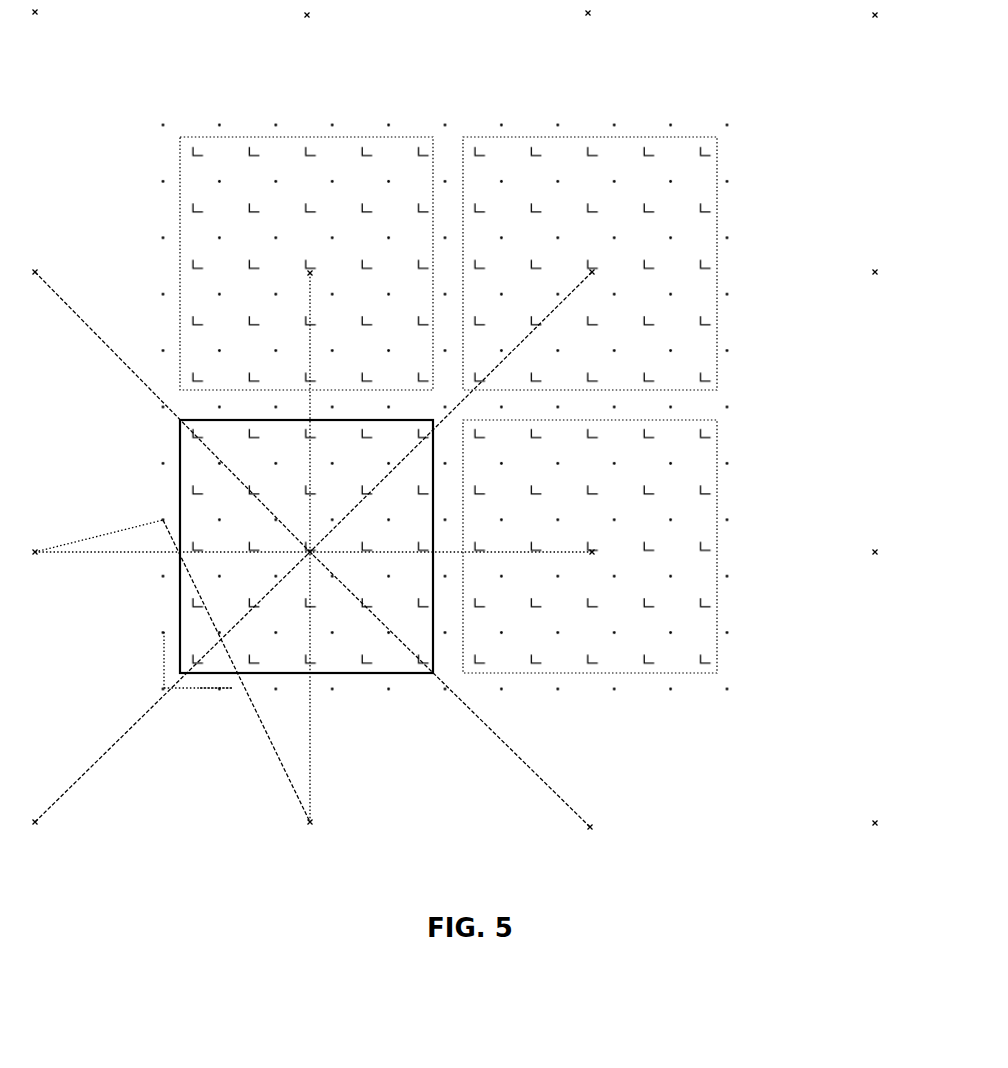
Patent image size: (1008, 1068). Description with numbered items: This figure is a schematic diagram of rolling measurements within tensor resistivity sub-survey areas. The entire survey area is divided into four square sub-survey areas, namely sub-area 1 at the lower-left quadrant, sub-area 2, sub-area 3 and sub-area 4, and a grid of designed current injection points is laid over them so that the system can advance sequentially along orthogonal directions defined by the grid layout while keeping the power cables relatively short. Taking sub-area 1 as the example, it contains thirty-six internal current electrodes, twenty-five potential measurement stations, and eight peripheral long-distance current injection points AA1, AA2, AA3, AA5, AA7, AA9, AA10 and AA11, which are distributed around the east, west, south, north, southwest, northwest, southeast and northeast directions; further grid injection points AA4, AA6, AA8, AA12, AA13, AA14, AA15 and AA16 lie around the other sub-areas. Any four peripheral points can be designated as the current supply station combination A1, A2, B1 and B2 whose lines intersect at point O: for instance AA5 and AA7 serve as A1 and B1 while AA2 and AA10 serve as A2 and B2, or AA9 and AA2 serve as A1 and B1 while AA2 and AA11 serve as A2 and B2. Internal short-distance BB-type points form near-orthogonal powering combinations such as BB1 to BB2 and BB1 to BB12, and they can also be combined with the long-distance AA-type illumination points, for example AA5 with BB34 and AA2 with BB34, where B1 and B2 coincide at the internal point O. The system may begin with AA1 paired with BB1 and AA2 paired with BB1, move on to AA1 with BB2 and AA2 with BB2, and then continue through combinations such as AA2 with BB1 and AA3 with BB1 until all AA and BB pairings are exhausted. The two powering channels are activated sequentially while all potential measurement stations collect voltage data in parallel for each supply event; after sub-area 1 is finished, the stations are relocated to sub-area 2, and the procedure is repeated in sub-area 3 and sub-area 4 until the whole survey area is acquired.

The sub-area 1 is at (306, 546).
The sub-area 2 is at (590, 546).
The sub-area 3 is at (306, 263).
The sub-area 4 is at (590, 263).
The peripheral long-distance current injection point AA1 is at (171, 699).
The peripheral long-distance current injection point AA2 is at (311, 699).
The peripheral long-distance current injection point AA3 is at (457, 699).
The current injection point AA4 is at (873, 834).
The peripheral long-distance current injection point AA5 is at (171, 563).
The current injection point AA6 is at (328, 551).
The peripheral long-distance current injection point AA7 is at (460, 561).
The current injection point AA8 is at (873, 563).
The peripheral long-distance current injection point AA9 is at (172, 408).
The peripheral long-distance current injection point AA10 is at (330, 403).
The peripheral long-distance current injection point AA11 is at (469, 411).
The current injection point AA12 is at (870, 282).
The current injection point AA13 is at (52, 24).
The current injection point AA14 is at (293, 27).
The current injection point AA15 is at (598, 26).
The current injection point AA16 is at (870, 27).
The internal current injection point BB1 is at (182, 690).
The internal current injection point BB2 is at (217, 699).
The internal current injection point BB12 is at (160, 653).
The internal current injection point BB34 is at (172, 662).